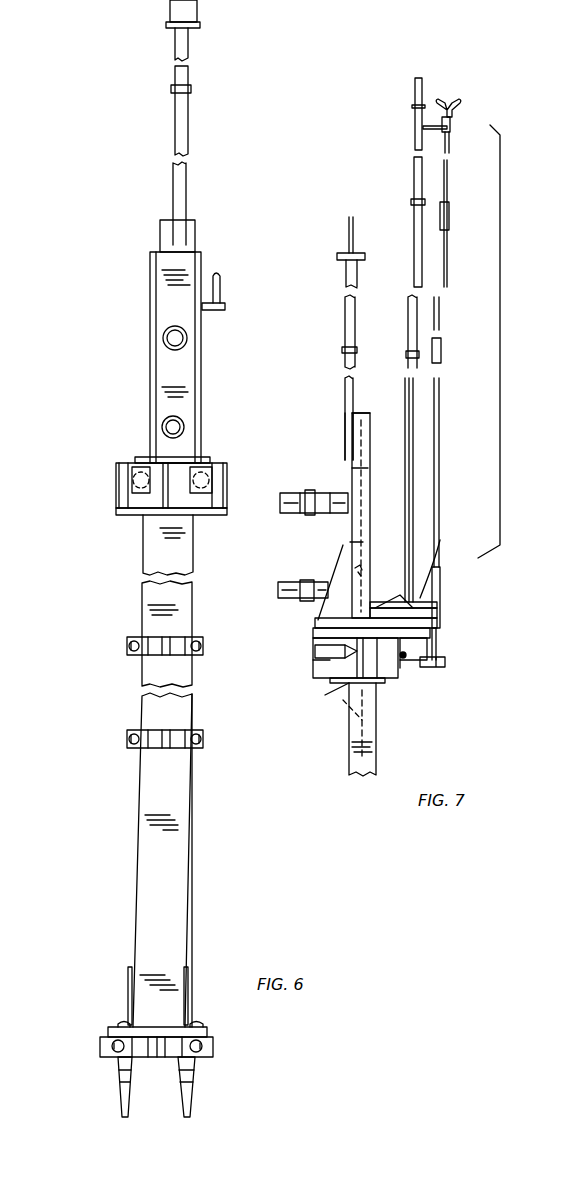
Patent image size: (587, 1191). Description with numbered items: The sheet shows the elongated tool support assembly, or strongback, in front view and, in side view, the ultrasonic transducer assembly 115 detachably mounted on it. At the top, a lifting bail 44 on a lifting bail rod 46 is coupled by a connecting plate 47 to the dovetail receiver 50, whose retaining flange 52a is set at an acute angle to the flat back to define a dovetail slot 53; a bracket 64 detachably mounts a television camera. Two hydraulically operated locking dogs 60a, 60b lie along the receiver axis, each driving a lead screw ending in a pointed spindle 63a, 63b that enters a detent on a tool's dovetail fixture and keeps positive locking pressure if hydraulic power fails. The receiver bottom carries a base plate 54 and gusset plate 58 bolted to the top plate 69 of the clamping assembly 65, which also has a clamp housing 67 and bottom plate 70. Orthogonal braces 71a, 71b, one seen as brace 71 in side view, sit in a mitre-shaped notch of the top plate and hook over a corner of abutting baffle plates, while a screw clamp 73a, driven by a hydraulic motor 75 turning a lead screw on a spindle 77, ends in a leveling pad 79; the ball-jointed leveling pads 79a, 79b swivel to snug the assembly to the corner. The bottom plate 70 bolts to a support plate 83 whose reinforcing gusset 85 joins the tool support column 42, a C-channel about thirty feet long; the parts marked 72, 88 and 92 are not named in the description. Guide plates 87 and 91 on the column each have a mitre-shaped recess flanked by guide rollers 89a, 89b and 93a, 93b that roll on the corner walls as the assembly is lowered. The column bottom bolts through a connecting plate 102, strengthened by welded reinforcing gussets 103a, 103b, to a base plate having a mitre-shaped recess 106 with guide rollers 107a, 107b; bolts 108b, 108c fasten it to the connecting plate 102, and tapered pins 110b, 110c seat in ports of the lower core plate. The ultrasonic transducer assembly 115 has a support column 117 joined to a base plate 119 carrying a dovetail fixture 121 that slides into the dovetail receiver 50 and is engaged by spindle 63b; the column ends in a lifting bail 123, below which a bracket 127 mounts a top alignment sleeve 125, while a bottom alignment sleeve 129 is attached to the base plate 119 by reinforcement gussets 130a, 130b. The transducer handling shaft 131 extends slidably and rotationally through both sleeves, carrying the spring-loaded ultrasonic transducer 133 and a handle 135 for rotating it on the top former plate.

In FIG. 6, the tool support column 42 is at (150, 798).
In FIG. 7, the tool support column 42 is at (360, 776).
In FIG. 6, the lifting bail 44 is at (200, 10).
In FIG. 7, the lifting bail 44 is at (350, 218).
In FIG. 6, the lifting bail rod 46 is at (188, 132).
In FIG. 7, the lifting bail rod 46 is at (347, 273).
In FIG. 7, the connecting plate 47 is at (350, 440).
In FIG. 7, the dovetail receiver 50 is at (364, 448).
In FIG. 7, the retaining flange 52a is at (362, 415).
In FIG. 7, the dovetail slot 53 is at (370, 497).
In FIG. 7, the base plate 54 is at (315, 620).
In FIG. 7, the gusset plate 58 is at (343, 545).
In FIG. 6, the locking dog 60a is at (166, 325).
In FIG. 7, the locking dog 60a is at (318, 472).
In FIG. 6, the locking dog 60b is at (164, 414).
In FIG. 7, the locking dog 60b is at (300, 563).
In FIG. 6, the pointed spindle 63a is at (175, 338).
In FIG. 6, the pointed spindle 63b is at (173, 427).
In FIG. 6, the bracket 64 is at (225, 306).
In FIG. 6, the clamping assembly 65 is at (113, 455).
In FIG. 7, the clamping assembly 65 is at (403, 655).
In FIG. 7, the clamp housing 67 is at (372, 675).
In FIG. 6, the top plate 69 is at (175, 462).
In FIG. 7, the top plate 69 is at (315, 632).
In FIG. 7, the bottom plate 70 is at (313, 672).
In FIG. 7, the brace 71 is at (418, 645).
In FIG. 6, the brace 71a is at (135, 492).
In FIG. 6, the brace 71b is at (203, 497).
In FIG. 6, the tube section 72 is at (185, 500).
In FIG. 7, the screw clamp 73a is at (315, 652).
In FIG. 7, the hydraulic motor 75 is at (325, 690).
In FIG. 7, the spindle 77 is at (400, 665).
In FIG. 7, the leveling pad 79 is at (405, 658).
In FIG. 6, the leveling pad 79a is at (133, 481).
In FIG. 6, the leveling pad 79b is at (214, 470).
In FIG. 6, the support plate 83 is at (150, 530).
In FIG. 7, the reinforcing gusset 85 is at (343, 700).
In FIG. 6, the guide plate 87 is at (152, 633).
In FIG. 6, the clamp band 88 is at (155, 652).
In FIG. 6, the guide roller 89a is at (127, 645).
In FIG. 6, the guide roller 89b is at (202, 650).
In FIG. 6, the guide plate 91 is at (152, 725).
In FIG. 6, the clamp band 92 is at (153, 748).
In FIG. 6, the guide roller 93a is at (127, 739).
In FIG. 6, the guide roller 93b is at (203, 742).
In FIG. 6, the connecting plate 102 is at (108, 1028).
In FIG. 6, the reinforcing gusset 103a is at (130, 970).
In FIG. 6, the reinforcing gusset 103b is at (188, 975).
In FIG. 6, the mitre-shaped recess 106 is at (125, 1065).
In FIG. 6, the guide roller 107a is at (112, 1046).
In FIG. 6, the guide roller 107b is at (203, 1048).
In FIG. 6, the bolt 108b is at (121, 1022).
In FIG. 6, the bolt 108c is at (198, 1022).
In FIG. 6, the tapered pin 110b is at (120, 1100).
In FIG. 6, the tapered pin 110c is at (195, 1100).
In FIG. 7, the ultrasonic transducer assembly 115 is at (500, 325).
In FIG. 7, the support column 117 is at (415, 228).
In FIG. 7, the base plate 119 is at (400, 602).
In FIG. 7, the dovetail fixture 121 is at (395, 600).
In FIG. 7, the lifting bail 123 is at (418, 78).
In FIG. 7, the top alignment sleeve 125 is at (452, 127).
In FIG. 7, the bracket 127 is at (430, 130).
In FIG. 7, the bottom alignment sleeve 129 is at (440, 596).
In FIG. 7, the reinforcement gusset 130a is at (440, 540).
In FIG. 7, the reinforcement gusset 130b is at (386, 569).
In FIG. 7, the transducer handling shaft 131 is at (440, 432).
In FIG. 7, the ultrasonic transducer 133 is at (447, 662).
In FIG. 7, the handle 135 is at (455, 100).